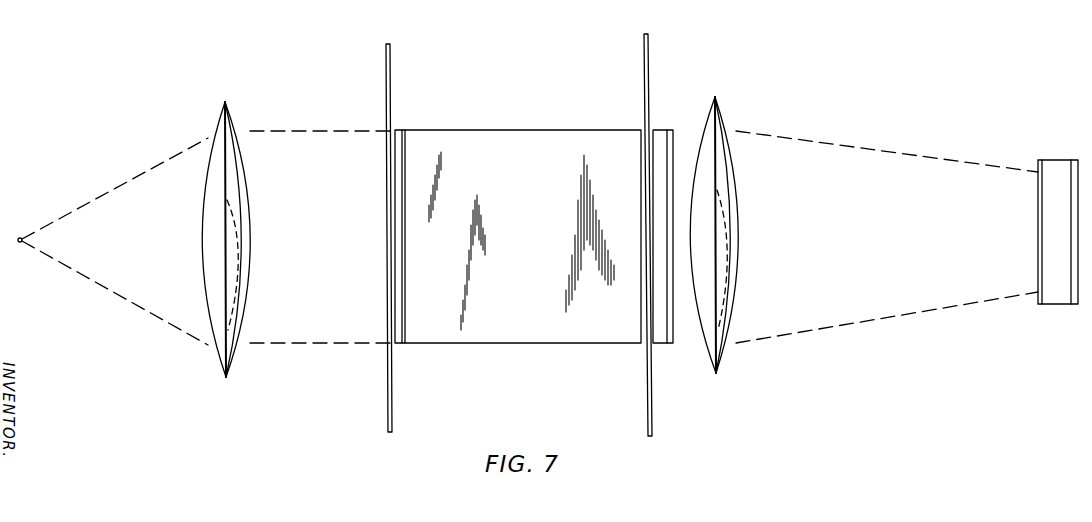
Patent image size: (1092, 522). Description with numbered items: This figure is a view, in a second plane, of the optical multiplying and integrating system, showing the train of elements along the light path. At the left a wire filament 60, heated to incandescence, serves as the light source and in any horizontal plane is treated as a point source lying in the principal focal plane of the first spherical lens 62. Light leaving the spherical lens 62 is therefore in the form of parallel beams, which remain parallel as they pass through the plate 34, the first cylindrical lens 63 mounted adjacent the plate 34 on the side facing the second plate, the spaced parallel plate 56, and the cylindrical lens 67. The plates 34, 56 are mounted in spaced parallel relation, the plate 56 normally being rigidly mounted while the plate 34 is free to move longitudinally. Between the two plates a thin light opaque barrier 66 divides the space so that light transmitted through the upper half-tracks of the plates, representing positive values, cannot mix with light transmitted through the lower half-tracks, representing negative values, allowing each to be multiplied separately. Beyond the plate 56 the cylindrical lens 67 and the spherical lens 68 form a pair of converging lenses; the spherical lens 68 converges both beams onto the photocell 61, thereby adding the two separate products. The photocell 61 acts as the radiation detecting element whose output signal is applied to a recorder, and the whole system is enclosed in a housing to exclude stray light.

The wire filament 60 is at (22, 237).
The first spherical lens 62 is at (230, 122).
The plate 34 is at (386, 47).
The first cylindrical lens 63 is at (403, 130).
The light opaque barrier 66 is at (553, 130).
The plate 56 is at (649, 50).
The cylindrical lens 67 is at (666, 130).
The spherical lens 68 is at (718, 118).
The photocell 61 is at (1049, 160).